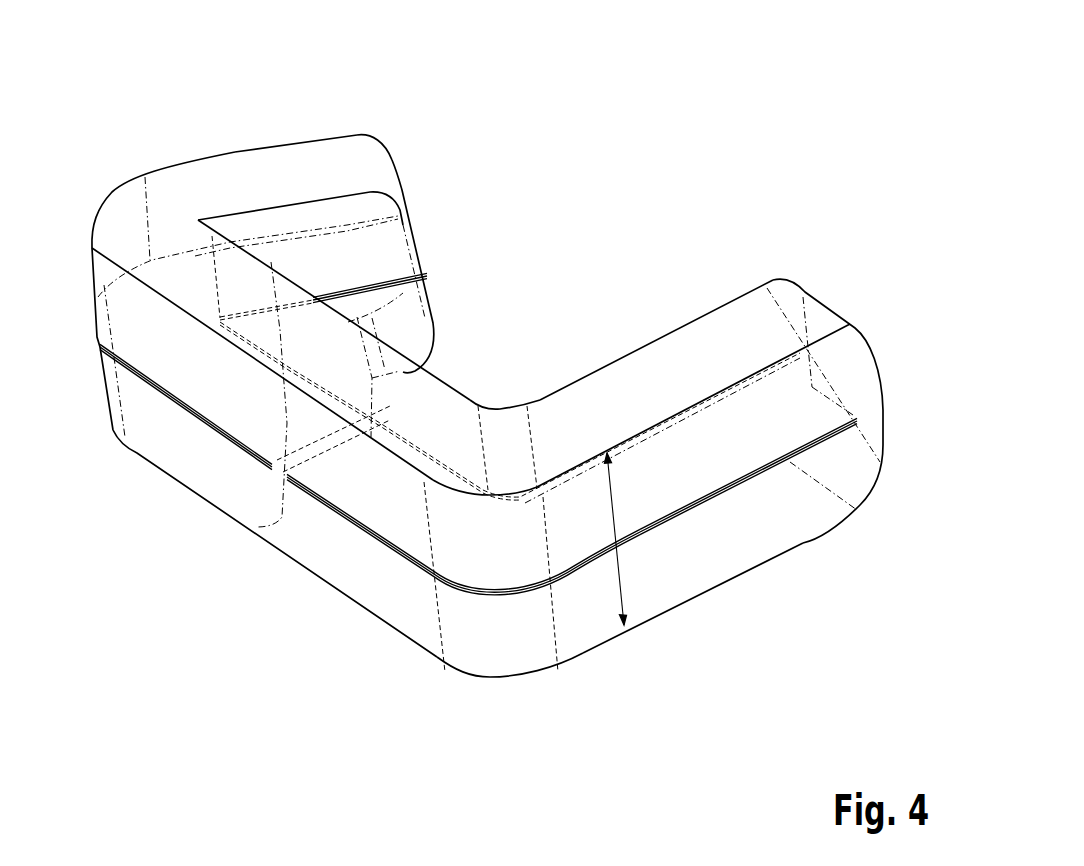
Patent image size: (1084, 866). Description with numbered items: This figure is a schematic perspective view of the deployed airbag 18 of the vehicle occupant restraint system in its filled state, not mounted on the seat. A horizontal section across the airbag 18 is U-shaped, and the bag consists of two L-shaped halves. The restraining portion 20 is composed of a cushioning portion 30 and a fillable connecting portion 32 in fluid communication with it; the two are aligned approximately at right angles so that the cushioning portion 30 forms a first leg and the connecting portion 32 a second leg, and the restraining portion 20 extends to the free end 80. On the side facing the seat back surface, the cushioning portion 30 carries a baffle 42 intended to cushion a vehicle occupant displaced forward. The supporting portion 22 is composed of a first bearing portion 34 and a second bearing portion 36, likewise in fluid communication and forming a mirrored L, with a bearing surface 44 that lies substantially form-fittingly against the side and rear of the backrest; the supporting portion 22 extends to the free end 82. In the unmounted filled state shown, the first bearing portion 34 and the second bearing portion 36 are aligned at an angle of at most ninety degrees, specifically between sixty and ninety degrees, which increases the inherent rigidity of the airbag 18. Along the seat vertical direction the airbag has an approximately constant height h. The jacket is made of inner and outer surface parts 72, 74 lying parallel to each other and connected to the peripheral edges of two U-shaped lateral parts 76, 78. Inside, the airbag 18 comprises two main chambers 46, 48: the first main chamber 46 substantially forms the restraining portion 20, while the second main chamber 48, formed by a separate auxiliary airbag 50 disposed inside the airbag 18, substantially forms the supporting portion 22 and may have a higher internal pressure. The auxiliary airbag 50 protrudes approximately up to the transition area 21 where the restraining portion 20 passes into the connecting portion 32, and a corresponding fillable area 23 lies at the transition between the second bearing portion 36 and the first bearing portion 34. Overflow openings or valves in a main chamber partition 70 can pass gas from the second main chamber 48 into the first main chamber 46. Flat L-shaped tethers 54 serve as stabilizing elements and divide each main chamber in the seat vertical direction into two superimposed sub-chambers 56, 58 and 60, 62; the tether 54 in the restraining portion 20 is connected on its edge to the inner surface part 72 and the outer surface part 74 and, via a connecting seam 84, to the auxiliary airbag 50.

The airbag 18 is at (608, 240).
The restraining portion 20 is at (522, 692).
The transition area 21 is at (417, 430).
The supporting portion 22 is at (129, 158).
The fillable area 23 is at (188, 442).
The cushioning portion 30 is at (798, 552).
The connecting portion 32 is at (411, 660).
The first bearing portion 34 is at (278, 135).
The second bearing portion 36 is at (188, 492).
The baffle 42 is at (697, 318).
The bearing surface 44 is at (343, 253).
The first main chamber 46 is at (577, 427).
The second main chamber 48 is at (152, 236).
The auxiliary airbag 50 is at (260, 522).
The tether 54 is at (245, 417).
The sub-chamber 56 is at (722, 534).
The sub-chamber 58 is at (720, 439).
The sub-chamber 60 is at (139, 434).
The sub-chamber 62 is at (139, 347).
The main chamber partition 70 is at (317, 450).
The inner surface part 72 is at (367, 260).
The outer surface part 74 is at (375, 590).
The lateral part 76 is at (253, 188).
The lateral part 78 is at (648, 632).
The free end 80 is at (812, 307).
The free end 82 is at (382, 155).
The connecting seam 84 is at (337, 455).
The height h is at (598, 588).